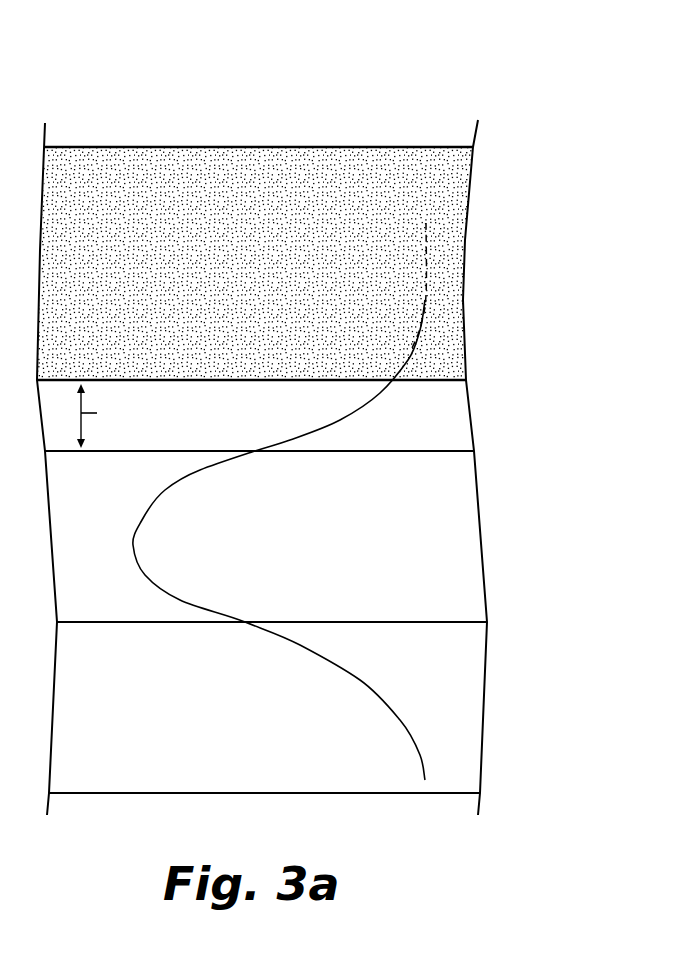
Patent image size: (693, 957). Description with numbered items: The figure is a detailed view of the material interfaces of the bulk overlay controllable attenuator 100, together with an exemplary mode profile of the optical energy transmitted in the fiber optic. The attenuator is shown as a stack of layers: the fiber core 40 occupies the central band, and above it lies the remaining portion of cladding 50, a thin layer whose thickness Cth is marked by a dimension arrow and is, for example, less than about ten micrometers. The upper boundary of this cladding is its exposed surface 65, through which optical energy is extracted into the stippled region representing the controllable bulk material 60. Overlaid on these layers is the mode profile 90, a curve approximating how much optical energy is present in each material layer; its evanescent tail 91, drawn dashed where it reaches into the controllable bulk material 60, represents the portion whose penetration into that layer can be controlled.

The controllable attenuator 100 is at (342, 114).
The controllable bulk material 60 is at (443, 242).
The exposed surface 65 is at (260, 387).
The remaining portion of cladding 50 is at (440, 421).
The fiber core 40 is at (444, 545).
The mode profile 90 is at (163, 490).
The evanescent tail 91 is at (424, 259).
The cladding thickness Cth is at (103, 416).